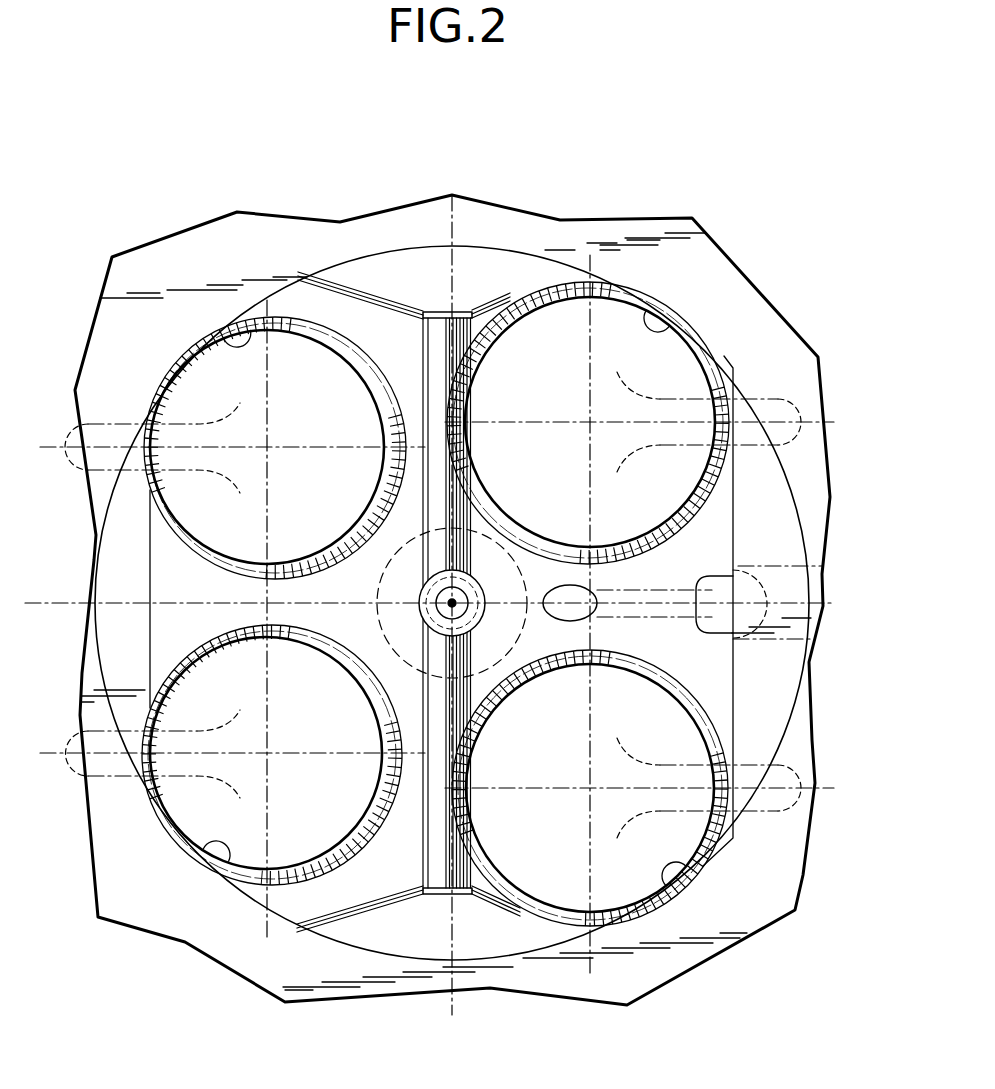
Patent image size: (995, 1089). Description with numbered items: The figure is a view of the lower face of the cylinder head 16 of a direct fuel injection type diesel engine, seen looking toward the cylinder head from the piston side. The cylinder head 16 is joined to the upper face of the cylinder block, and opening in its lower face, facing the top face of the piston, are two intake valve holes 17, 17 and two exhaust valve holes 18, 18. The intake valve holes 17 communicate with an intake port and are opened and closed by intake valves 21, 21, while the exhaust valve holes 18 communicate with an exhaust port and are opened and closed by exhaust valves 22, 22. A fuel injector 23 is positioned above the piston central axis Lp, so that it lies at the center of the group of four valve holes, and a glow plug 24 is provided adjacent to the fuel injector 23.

The cylinder head 16 is at (726, 250).
The intake valve hole 17 is at (660, 326).
The exhaust valve hole 18 is at (225, 330).
The intake valve 21 is at (700, 392).
The exhaust valve 22 is at (183, 423).
The fuel injector 23 is at (450, 604).
The glow plug 24 is at (748, 568).
The piston central axis Lp is at (453, 601).